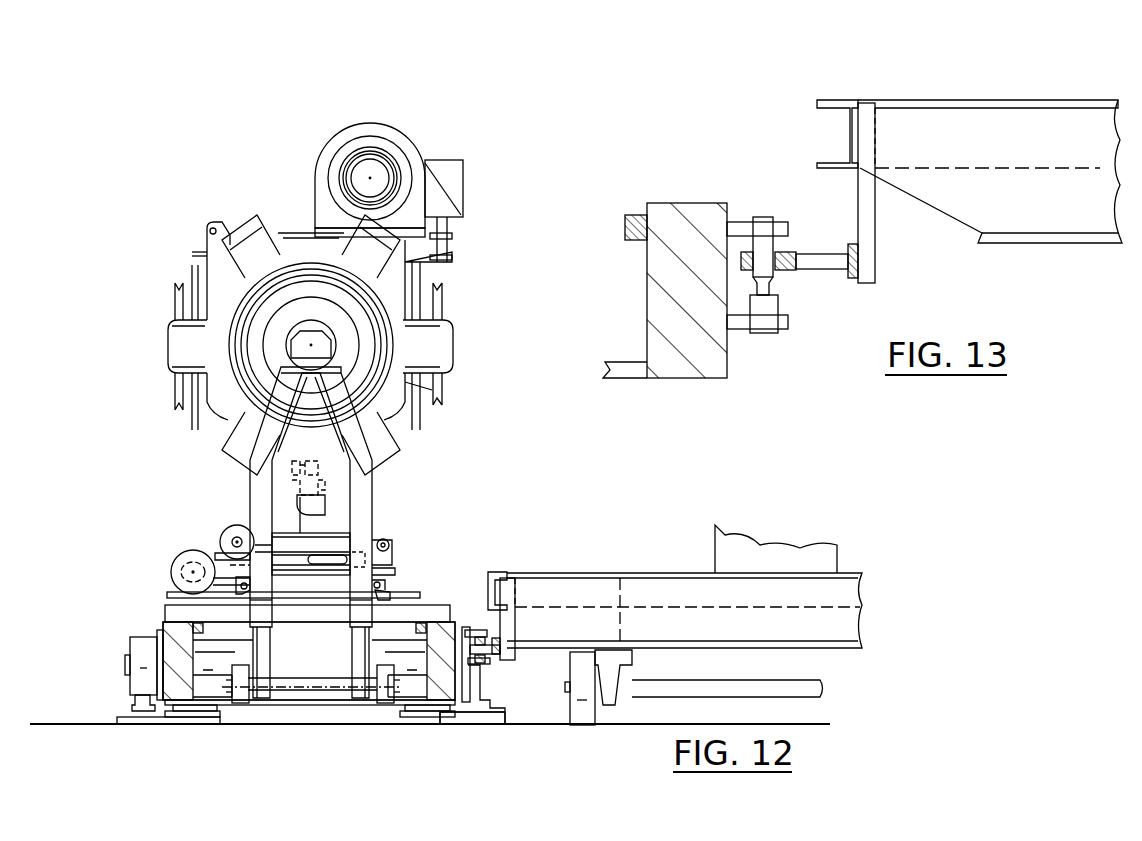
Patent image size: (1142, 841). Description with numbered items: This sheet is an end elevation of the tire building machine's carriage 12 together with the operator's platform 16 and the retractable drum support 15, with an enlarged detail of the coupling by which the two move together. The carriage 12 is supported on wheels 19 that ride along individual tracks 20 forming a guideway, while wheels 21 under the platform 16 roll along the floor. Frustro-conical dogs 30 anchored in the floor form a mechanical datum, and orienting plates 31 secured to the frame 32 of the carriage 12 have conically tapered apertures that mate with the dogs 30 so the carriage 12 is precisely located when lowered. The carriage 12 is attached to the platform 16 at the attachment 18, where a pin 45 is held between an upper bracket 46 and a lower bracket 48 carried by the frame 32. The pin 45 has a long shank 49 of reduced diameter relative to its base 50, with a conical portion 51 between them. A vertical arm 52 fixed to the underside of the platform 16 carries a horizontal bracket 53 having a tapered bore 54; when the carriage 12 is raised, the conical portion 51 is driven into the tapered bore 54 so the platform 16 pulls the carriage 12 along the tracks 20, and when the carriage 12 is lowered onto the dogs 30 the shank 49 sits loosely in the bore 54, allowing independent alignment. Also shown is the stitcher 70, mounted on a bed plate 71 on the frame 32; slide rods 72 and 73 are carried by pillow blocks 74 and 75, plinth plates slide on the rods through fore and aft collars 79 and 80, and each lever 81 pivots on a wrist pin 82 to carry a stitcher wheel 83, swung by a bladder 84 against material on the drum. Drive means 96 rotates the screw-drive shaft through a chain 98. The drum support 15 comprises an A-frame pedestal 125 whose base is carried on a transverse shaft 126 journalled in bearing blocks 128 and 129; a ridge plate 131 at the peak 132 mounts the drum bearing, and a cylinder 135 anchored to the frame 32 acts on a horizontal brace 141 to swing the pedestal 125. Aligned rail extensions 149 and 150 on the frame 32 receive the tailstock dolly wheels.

In FIG. 12, the carriage 12 is at (134, 611).
In FIG. 12, the retractable drum support 15 is at (253, 436).
In FIG. 12, the operator's platform 16 is at (687, 590).
In FIG. 13, the operator's platform 16 is at (1018, 100).
In FIG. 12, the attachment 18 is at (482, 598).
In FIG. 13, the attachment 18 is at (775, 148).
In FIG. 12, the wheels 19 is at (140, 680).
In FIG. 12, the tracks 20 is at (132, 708).
In FIG. 12, the wheels 21 is at (583, 706).
In FIG. 12, the frustro-conical dogs 30 is at (195, 716).
In FIG. 12, the orienting plates 31 is at (170, 712).
In FIG. 12, the frame 32 is at (176, 655).
In FIG. 13, the frame 32 is at (660, 327).
In FIG. 12, the pin 45 is at (495, 672).
In FIG. 13, the pin 45 is at (796, 306).
In FIG. 13, the upper bracket 46 is at (748, 220).
In FIG. 13, the lower bracket 48 is at (745, 330).
In FIG. 13, the shank 49 is at (770, 247).
In FIG. 13, the base 50 is at (770, 310).
In FIG. 13, the conical portion 51 is at (772, 288).
In FIG. 12, the vertical arm 52 is at (515, 630).
In FIG. 13, the vertical arm 52 is at (870, 218).
In FIG. 13, the horizontal bracket 53 is at (830, 255).
In FIG. 13, the tapered bore 54 is at (745, 272).
In FIG. 12, the stitcher 70 is at (215, 524).
In FIG. 12, the bed plate 71 is at (303, 600).
In FIG. 12, the slide rod 72 is at (385, 583).
In FIG. 12, the slide rod 73 is at (244, 594).
In FIG. 12, the pillow block 74 is at (390, 596).
In FIG. 12, the pillow block 75 is at (215, 594).
In FIG. 12, the fore collar 79 is at (392, 570).
In FIG. 12, the aft collar 80 is at (190, 570).
In FIG. 12, the lever 81 is at (325, 540).
In FIG. 12, the wrist pin 82 is at (385, 540).
In FIG. 12, the stitcher wheel 83 is at (248, 548).
In FIG. 12, the bladder 84 is at (322, 564).
In FIG. 12, the drive means 96 is at (175, 565).
In FIG. 12, the chain 98 is at (230, 560).
In FIG. 12, the A-frame pedestal 125 is at (360, 530).
In FIG. 12, the shaft 126 is at (310, 690).
In FIG. 12, the bearing block 128 is at (240, 703).
In FIG. 12, the bearing block 129 is at (385, 703).
In FIG. 12, the ridge plate 131 is at (380, 348).
In FIG. 12, the peak 132 is at (405, 382).
In FIG. 12, the cylinder 135 is at (325, 480).
In FIG. 12, the horizontal brace 141 is at (287, 478).
In FIG. 12, the rail extension 149 is at (157, 632).
In FIG. 12, the rail extension 150 is at (500, 640).
In FIG. 13, the rail extension 150 is at (632, 212).